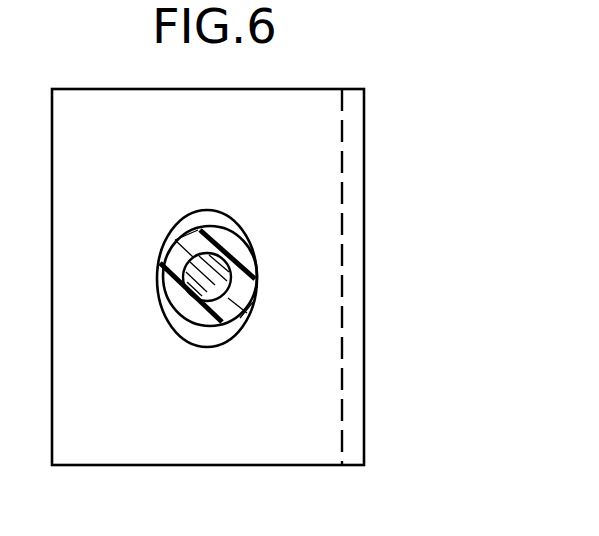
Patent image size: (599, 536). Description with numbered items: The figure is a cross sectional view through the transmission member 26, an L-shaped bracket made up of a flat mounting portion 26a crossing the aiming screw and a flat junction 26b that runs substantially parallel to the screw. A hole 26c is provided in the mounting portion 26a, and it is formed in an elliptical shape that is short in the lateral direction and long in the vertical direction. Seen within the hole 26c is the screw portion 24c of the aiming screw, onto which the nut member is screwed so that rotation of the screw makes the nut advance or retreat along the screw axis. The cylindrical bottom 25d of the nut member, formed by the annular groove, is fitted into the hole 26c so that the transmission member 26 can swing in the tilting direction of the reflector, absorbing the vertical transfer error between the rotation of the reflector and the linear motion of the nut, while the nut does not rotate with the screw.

The transmission member 26 is at (495, 115).
The mounting portion 26a is at (317, 146).
The junction 26b is at (380, 203).
The hole 26c is at (222, 218).
The screw portion 24c is at (226, 292).
The cylindrical bottom 25d is at (232, 322).